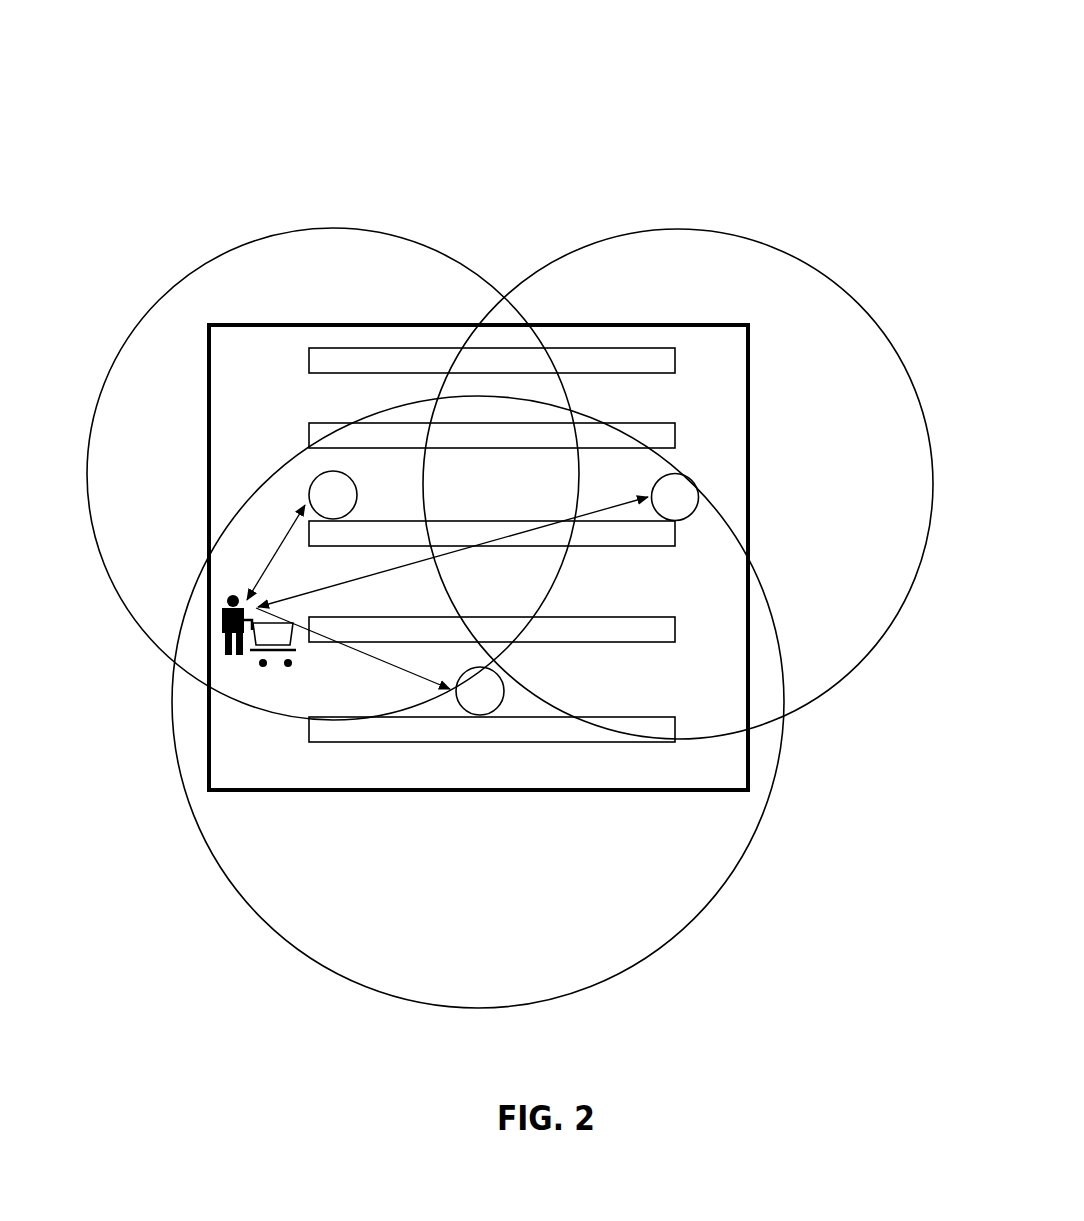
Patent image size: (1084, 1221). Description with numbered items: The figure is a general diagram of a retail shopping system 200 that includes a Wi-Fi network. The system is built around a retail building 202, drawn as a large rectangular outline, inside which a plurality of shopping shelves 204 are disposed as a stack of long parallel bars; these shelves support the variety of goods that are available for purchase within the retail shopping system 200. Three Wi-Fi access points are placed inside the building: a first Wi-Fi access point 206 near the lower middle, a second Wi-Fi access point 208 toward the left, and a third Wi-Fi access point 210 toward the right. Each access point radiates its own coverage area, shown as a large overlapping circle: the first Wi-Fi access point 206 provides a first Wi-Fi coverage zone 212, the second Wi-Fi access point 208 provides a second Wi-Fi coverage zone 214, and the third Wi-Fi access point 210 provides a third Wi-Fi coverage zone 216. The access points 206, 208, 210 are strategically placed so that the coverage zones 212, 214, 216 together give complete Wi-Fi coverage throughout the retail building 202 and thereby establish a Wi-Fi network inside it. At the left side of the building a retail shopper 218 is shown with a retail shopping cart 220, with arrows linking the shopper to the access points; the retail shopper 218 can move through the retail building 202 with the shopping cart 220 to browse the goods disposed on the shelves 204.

The retail shopping system 200 is at (658, 140).
The retail building 202 is at (722, 323).
The shopping shelves 204 is at (587, 358).
The first Wi-Fi access point 206 is at (480, 691).
The second Wi-Fi access point 208 is at (333, 495).
The third Wi-Fi access point 210 is at (677, 497).
The first Wi-Fi coverage zone 212 is at (478, 1008).
The second Wi-Fi coverage zone 214 is at (335, 228).
The third Wi-Fi coverage zone 216 is at (676, 229).
The retail shopper 218 is at (230, 655).
The retail shopping cart 220 is at (268, 640).